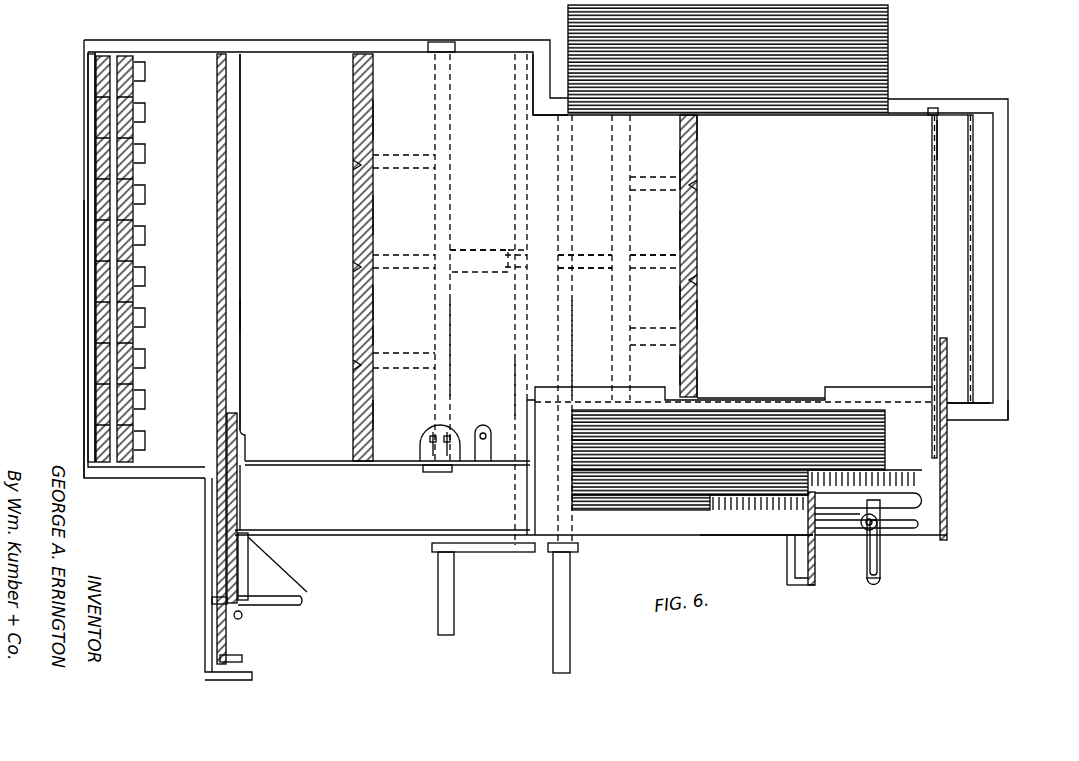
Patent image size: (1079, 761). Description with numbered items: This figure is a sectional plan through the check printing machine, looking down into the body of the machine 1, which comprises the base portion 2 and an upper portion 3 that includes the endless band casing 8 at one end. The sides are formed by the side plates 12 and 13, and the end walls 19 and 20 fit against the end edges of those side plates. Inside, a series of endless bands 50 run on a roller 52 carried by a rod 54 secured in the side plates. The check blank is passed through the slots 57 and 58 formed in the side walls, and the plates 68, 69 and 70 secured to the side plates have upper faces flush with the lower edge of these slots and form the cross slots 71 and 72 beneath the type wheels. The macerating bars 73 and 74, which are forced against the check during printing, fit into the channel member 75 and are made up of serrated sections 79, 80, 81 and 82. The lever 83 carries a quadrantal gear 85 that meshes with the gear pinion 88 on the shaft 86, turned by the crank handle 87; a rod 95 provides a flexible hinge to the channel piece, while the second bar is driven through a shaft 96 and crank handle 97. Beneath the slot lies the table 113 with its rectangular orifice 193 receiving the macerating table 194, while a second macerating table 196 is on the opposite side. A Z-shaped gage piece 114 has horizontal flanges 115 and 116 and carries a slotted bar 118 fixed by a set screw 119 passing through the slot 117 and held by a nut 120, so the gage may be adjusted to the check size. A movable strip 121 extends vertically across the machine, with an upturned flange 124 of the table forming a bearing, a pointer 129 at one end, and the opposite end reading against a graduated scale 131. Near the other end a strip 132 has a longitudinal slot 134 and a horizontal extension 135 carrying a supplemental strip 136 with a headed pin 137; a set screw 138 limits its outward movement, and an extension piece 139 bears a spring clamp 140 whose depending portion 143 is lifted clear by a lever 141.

The body of the machine 1 is at (1008, 420).
The base portion 2 is at (992, 330).
The upper portion 3 is at (955, 113).
The endless band casing 8 is at (84, 373).
The side plate 12 is at (960, 408).
The side plate 13 is at (949, 140).
The end wall 19 is at (975, 232).
The end wall 20 is at (84, 305).
The endless bands 50 is at (145, 240).
The roller 52 is at (132, 222).
The rod 54 is at (110, 247).
The slot 57 is at (748, 402).
The slot 58 is at (547, 75).
The plate 68 is at (280, 347).
The plate 69 is at (471, 350).
The plate 70 is at (759, 224).
The cross slot 71 is at (373, 335).
The cross slot 72 is at (698, 315).
The macerating bar 73 is at (698, 283).
The macerating bar 74 is at (350, 307).
The channel member 75 is at (700, 380).
The section 79 is at (373, 120).
The section 80 is at (373, 215).
The section 81 is at (373, 302).
The section 82 is at (373, 415).
The lever 83 is at (490, 287).
The quadrantal gear 85 is at (575, 272).
The shaft 86 is at (565, 342).
The crank handle 87 is at (570, 652).
The gear pinion 88 is at (578, 265).
The rod 95 is at (515, 250).
The shaft 96 is at (510, 383).
The crank handle 97 is at (487, 553).
The table 113 is at (745, 530).
The gage piece 114 is at (818, 578).
The horizontal flange 115 is at (918, 500).
The horizontal flange 116 is at (792, 568).
The slot 117 is at (905, 525).
The slotted bar 118 is at (880, 585).
The set screw 119 is at (858, 532).
The nut 120 is at (850, 520).
The movable strip 121 is at (938, 193).
The upturned flange 124 is at (950, 500).
The pointer 129 is at (935, 108).
The graduated scale 131 is at (817, 479).
The strip 132 is at (217, 378).
The longitudinal slot 134 is at (215, 540).
The horizontal extension 135 is at (234, 340).
The supplemental strip 136 is at (237, 508).
The headed pin 137 is at (212, 603).
The set screw 138 is at (243, 657).
The extension piece 139 is at (277, 592).
The spring clamp 140 is at (241, 571).
The lever 141 is at (243, 618).
The depending portion 143 is at (245, 603).
The rectangular orifice 193 is at (670, 512).
The macerating table 194 is at (782, 425).
The macerating table 196 is at (888, 68).